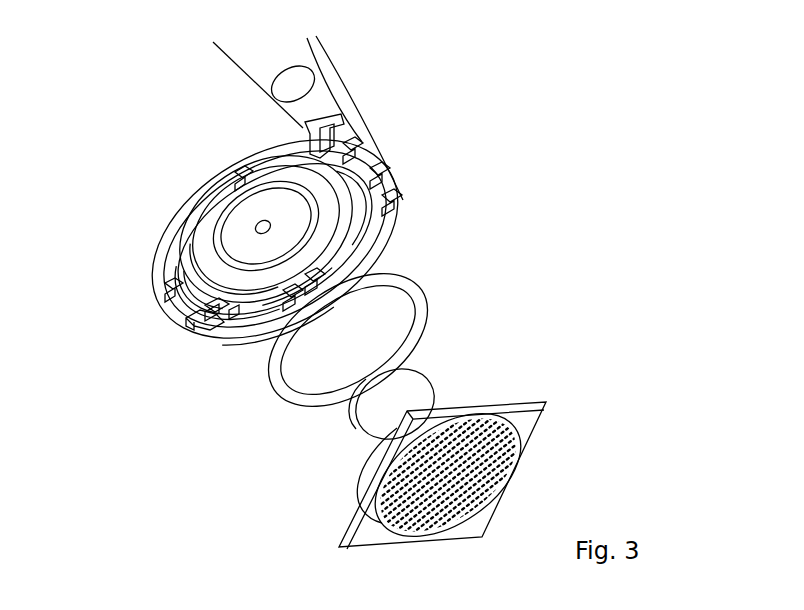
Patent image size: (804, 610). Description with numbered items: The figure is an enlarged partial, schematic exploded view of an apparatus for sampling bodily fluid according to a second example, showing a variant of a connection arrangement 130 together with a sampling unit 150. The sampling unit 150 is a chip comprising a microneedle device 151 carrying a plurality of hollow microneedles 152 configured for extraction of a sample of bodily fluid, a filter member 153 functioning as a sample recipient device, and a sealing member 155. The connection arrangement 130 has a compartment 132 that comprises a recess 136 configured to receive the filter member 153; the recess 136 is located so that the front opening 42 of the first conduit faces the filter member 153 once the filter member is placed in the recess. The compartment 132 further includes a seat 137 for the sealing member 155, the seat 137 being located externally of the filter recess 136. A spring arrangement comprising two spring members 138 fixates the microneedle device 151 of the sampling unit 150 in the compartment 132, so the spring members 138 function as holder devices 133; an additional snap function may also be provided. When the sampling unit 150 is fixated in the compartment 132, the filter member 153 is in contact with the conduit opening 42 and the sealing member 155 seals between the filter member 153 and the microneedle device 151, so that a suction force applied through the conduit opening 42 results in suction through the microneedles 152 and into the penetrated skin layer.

The connection arrangement 130 is at (421, 190).
The front opening 42 is at (271, 227).
The recess 136 is at (273, 238).
The compartment 132 is at (299, 258).
The seat 137 is at (207, 270).
The spring members 138 is at (328, 153).
The holder devices 133 is at (217, 330).
The sealing member 155 is at (420, 292).
The filter member 153 is at (420, 370).
The sampling unit 150 is at (493, 360).
The microneedle device 151 is at (522, 403).
The microneedles 152 is at (489, 470).